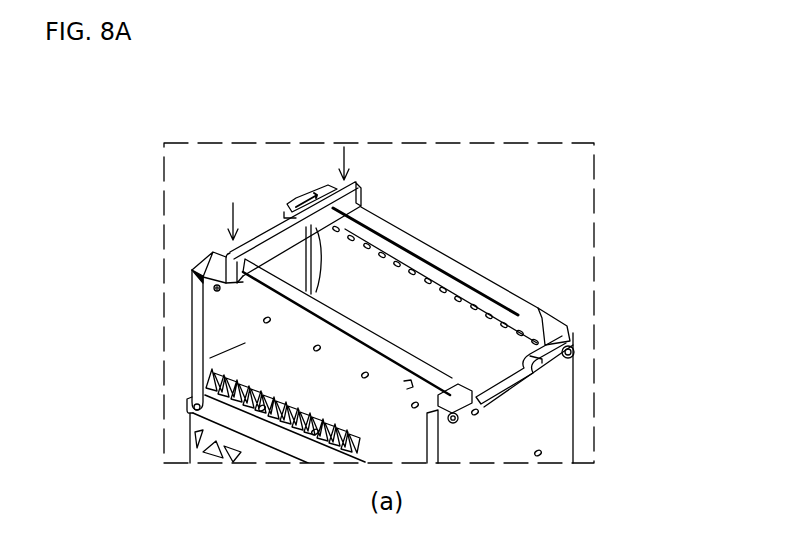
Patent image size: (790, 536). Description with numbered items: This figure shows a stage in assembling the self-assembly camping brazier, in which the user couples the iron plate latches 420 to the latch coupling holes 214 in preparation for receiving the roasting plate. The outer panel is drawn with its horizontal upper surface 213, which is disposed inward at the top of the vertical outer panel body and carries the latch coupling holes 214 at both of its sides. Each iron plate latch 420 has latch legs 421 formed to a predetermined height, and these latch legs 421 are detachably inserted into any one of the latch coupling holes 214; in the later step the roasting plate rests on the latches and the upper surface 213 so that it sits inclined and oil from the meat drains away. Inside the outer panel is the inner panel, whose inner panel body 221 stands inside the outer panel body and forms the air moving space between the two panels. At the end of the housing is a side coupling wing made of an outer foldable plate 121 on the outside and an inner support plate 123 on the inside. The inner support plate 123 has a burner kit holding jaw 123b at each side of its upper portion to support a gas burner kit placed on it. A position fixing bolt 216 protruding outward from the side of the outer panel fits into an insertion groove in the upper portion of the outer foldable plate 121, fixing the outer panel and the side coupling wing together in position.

The iron plate latch 420 is at (258, 245).
The latch leg 421 is at (193, 270).
The latch coupling hole 214 is at (242, 286).
The inner panel body 221 is at (207, 362).
The upper surface 213 is at (481, 282).
The burner kit holding jaw 123b is at (573, 334).
The inner support plate 123 is at (553, 372).
The outer foldable plate 121 is at (557, 412).
The position fixing bolt 216 is at (454, 419).